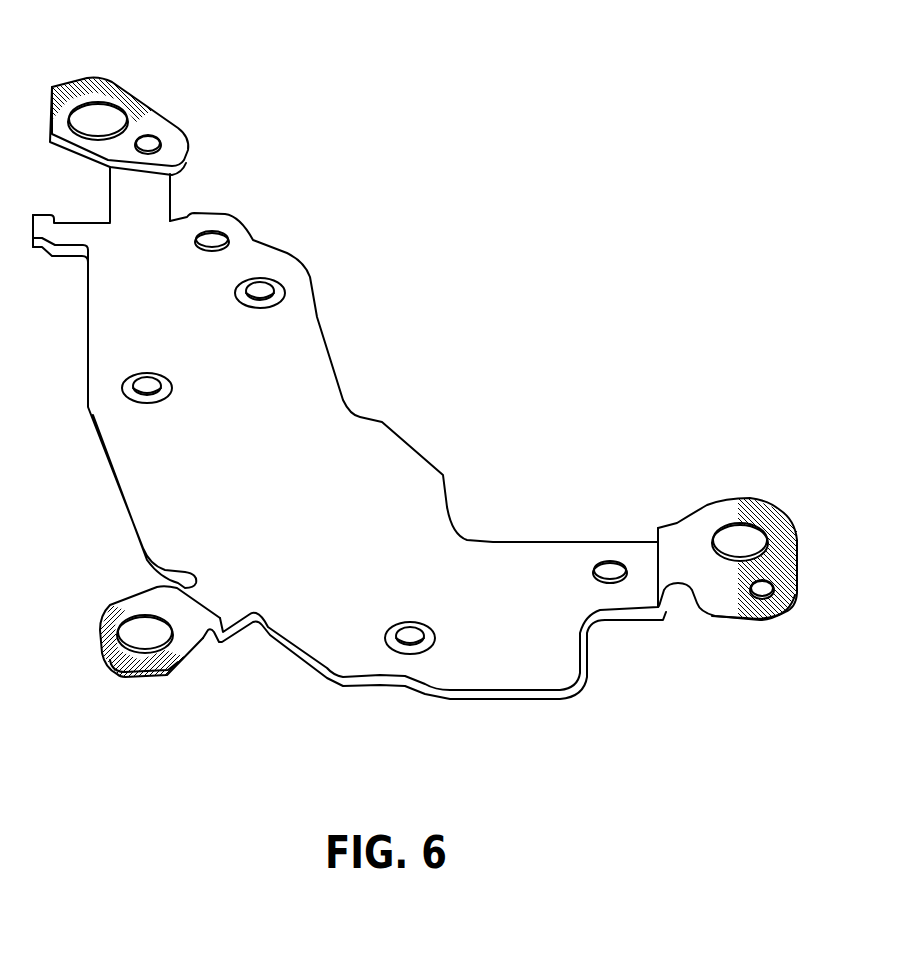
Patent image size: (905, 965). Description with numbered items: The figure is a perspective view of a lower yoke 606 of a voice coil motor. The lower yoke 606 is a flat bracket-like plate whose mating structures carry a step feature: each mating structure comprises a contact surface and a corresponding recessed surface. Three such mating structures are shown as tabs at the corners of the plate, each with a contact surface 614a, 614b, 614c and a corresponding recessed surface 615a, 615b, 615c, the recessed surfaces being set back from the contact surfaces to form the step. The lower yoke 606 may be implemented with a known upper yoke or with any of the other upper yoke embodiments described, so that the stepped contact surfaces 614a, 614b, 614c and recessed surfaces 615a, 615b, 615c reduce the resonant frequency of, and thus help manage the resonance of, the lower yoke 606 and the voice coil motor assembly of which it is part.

The lower yoke 606 is at (287, 475).
The contact surface 614a is at (103, 73).
The contact surface 614b is at (100, 643).
The contact surface 614c is at (780, 522).
The recessed surface 615a is at (172, 142).
The recessed surface 615b is at (152, 600).
The recessed surface 615c is at (707, 520).